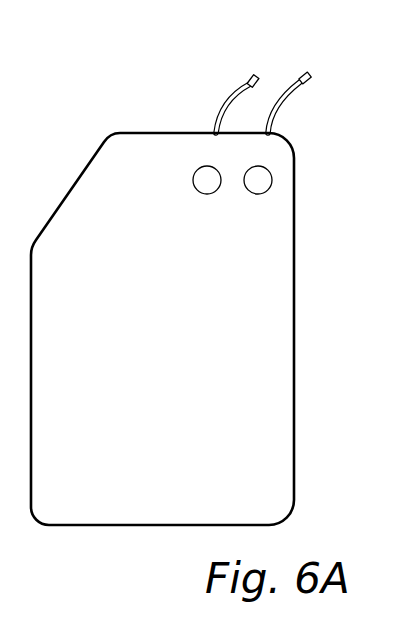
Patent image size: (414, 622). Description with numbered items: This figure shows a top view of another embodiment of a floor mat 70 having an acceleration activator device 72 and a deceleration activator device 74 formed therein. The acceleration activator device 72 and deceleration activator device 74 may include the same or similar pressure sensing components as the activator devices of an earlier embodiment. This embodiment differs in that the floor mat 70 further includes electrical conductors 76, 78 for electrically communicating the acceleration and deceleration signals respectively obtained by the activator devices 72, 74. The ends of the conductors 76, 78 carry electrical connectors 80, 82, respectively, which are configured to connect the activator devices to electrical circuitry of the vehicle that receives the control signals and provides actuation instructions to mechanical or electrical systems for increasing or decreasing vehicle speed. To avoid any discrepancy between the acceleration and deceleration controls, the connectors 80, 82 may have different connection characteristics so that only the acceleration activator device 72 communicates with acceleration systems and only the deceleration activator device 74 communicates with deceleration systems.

The floor mat 70 is at (294, 435).
The acceleration activator device 72 is at (256, 194).
The deceleration activator device 74 is at (205, 194).
The electrical conductor 76 is at (274, 116).
The electrical conductor 78 is at (220, 110).
The electrical connector 80 is at (312, 78).
The electrical connector 82 is at (247, 80).